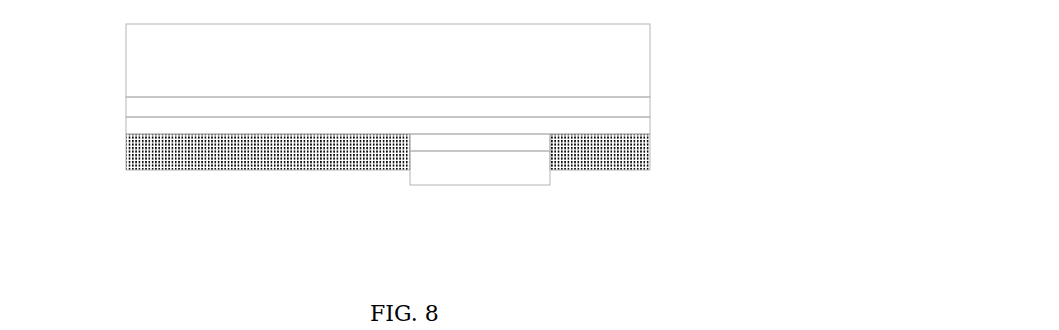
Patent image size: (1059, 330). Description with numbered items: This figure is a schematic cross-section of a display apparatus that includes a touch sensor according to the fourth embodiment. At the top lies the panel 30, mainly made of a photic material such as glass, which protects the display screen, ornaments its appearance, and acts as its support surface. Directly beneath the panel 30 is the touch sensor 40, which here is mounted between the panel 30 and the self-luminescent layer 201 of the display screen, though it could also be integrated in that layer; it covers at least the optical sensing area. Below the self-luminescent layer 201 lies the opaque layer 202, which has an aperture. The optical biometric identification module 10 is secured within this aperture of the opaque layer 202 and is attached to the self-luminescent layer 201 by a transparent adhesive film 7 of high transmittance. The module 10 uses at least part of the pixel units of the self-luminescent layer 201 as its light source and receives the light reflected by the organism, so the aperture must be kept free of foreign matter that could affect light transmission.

The panel 30 is at (538, 54).
The touch sensor 40 is at (165, 105).
The self-luminescent layer 201 is at (595, 127).
The opaque layer 202 is at (577, 153).
The transparent adhesive film 7 is at (520, 138).
The optical biometric identification module 10 is at (462, 160).